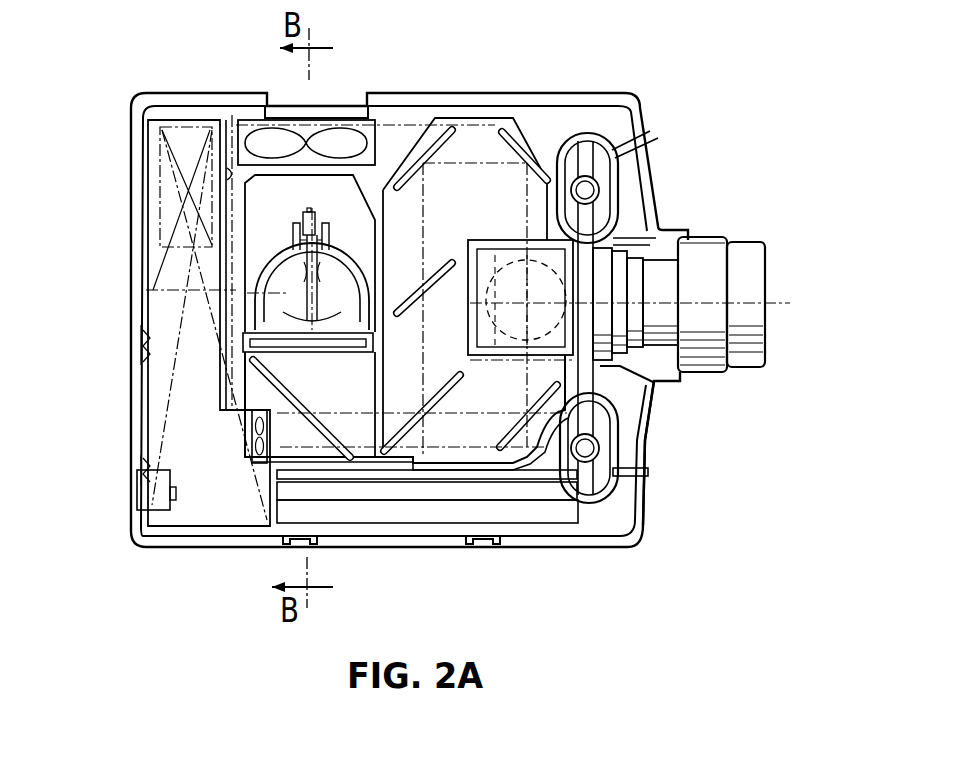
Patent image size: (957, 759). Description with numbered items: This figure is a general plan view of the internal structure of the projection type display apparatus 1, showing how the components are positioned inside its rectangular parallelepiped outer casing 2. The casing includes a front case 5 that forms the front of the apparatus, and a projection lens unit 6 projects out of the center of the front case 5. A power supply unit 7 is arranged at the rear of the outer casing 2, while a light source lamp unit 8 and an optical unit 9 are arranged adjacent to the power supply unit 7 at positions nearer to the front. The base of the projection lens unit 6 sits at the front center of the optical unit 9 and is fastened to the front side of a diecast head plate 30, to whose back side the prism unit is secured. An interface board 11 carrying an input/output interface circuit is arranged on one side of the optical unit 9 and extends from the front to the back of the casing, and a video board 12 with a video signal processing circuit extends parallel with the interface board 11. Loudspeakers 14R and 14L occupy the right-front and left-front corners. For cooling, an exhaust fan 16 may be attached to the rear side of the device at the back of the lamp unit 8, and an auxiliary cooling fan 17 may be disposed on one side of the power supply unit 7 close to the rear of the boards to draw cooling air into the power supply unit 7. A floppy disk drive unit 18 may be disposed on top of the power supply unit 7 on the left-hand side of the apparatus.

The projection type display apparatus 1 is at (600, 50).
The outer casing 2 is at (128, 252).
The front case 5 is at (648, 442).
The projection lens unit 6 is at (713, 233).
The power supply unit 7 is at (188, 437).
The light source lamp unit 8 is at (367, 247).
The optical unit 9 is at (483, 112).
The interface board 11 is at (533, 510).
The video board 12 is at (452, 480).
The loudspeaker 14R is at (622, 140).
The loudspeaker 14L is at (630, 470).
The exhaust fan 16 is at (250, 127).
The auxiliary cooling fan 17 is at (258, 445).
The floppy disk drive unit 18 is at (170, 393).
The head plate 30 is at (593, 378).